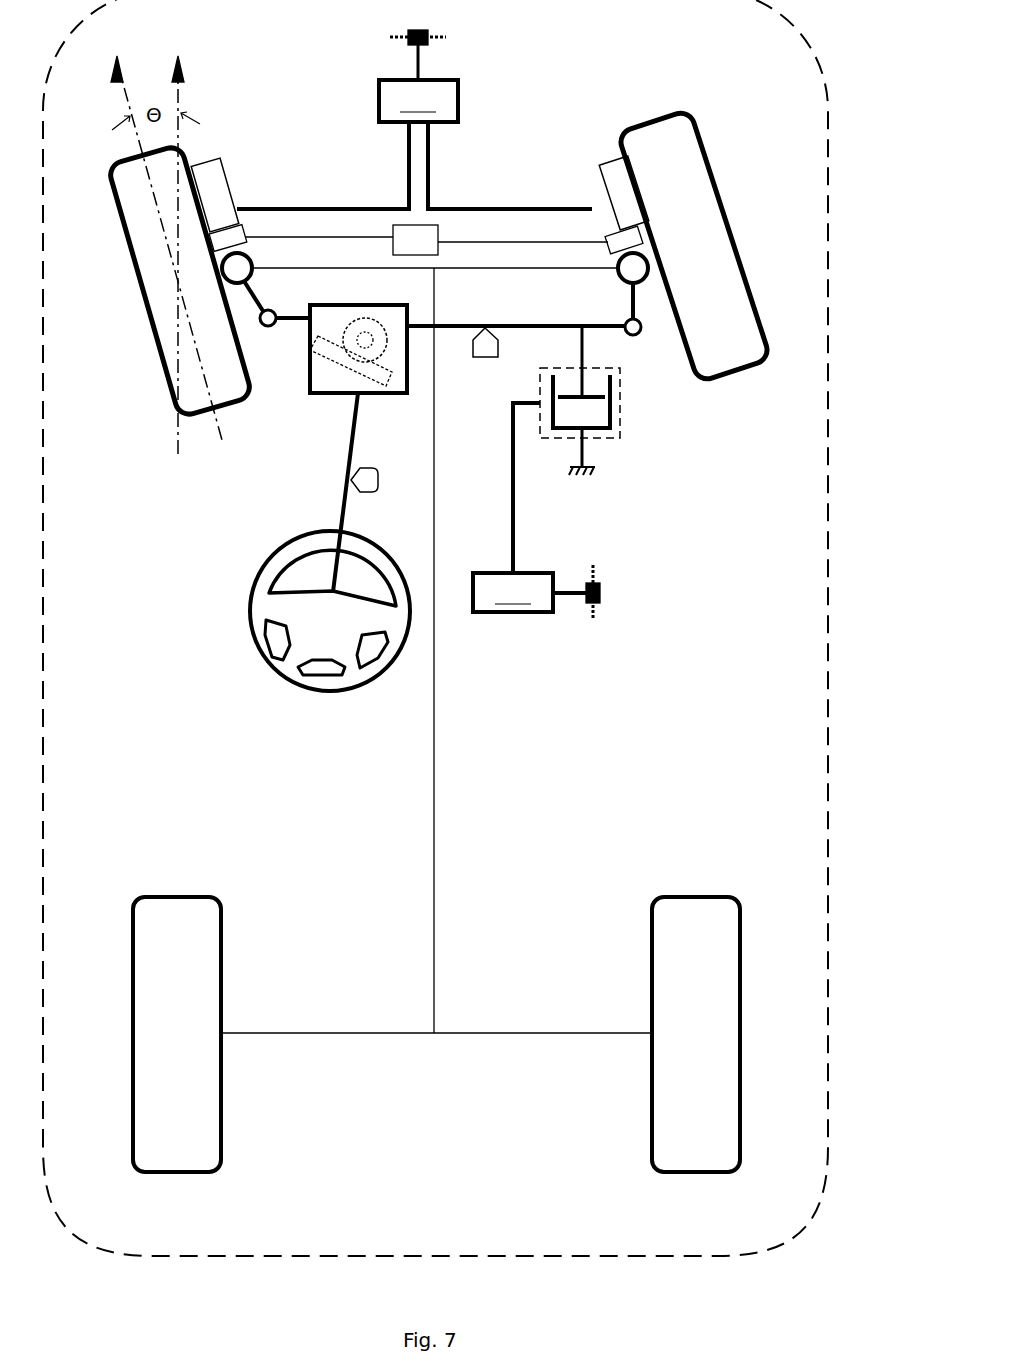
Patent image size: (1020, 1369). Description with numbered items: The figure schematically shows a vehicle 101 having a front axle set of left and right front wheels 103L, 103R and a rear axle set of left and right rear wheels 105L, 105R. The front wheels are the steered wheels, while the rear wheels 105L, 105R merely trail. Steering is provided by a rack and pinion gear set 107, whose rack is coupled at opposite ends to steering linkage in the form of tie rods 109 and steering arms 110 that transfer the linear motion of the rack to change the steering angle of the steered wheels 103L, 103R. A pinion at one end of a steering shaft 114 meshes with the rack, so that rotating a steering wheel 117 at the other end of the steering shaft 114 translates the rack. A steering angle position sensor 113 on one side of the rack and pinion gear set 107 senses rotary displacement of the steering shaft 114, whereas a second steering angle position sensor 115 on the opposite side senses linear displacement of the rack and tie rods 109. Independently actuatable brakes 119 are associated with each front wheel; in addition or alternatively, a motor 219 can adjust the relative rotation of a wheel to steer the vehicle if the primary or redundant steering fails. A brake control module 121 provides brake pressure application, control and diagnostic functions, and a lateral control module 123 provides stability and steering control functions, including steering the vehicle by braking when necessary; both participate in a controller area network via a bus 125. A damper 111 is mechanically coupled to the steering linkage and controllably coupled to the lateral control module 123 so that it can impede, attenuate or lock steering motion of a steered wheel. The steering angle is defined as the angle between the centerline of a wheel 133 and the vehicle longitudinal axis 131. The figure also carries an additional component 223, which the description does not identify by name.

The vehicle 101 is at (830, 192).
The left front wheel 103L is at (148, 338).
The right front wheel 103R is at (710, 150).
The left rear wheel 105L is at (176, 895).
The right rear wheel 105R is at (690, 895).
The rack and pinion gear set 107 is at (407, 385).
The tie rods 109 is at (298, 322).
The steering arms 110 is at (262, 298).
The damper 111 is at (620, 400).
The steering angle position sensor 113 is at (352, 490).
The steering shaft 114 is at (345, 435).
The steering angle position sensor 115 is at (473, 350).
The steering wheel 117 is at (253, 589).
The brakes 119 is at (224, 170).
The brake control module 121 is at (414, 127).
The lateral control module 123 is at (529, 507).
The bus 125 is at (432, 33).
The vehicle longitudinal axis 131 is at (178, 98).
The wheel 133 is at (123, 87).
The motor 219 is at (242, 234).
The sensor node 223 is at (438, 230).